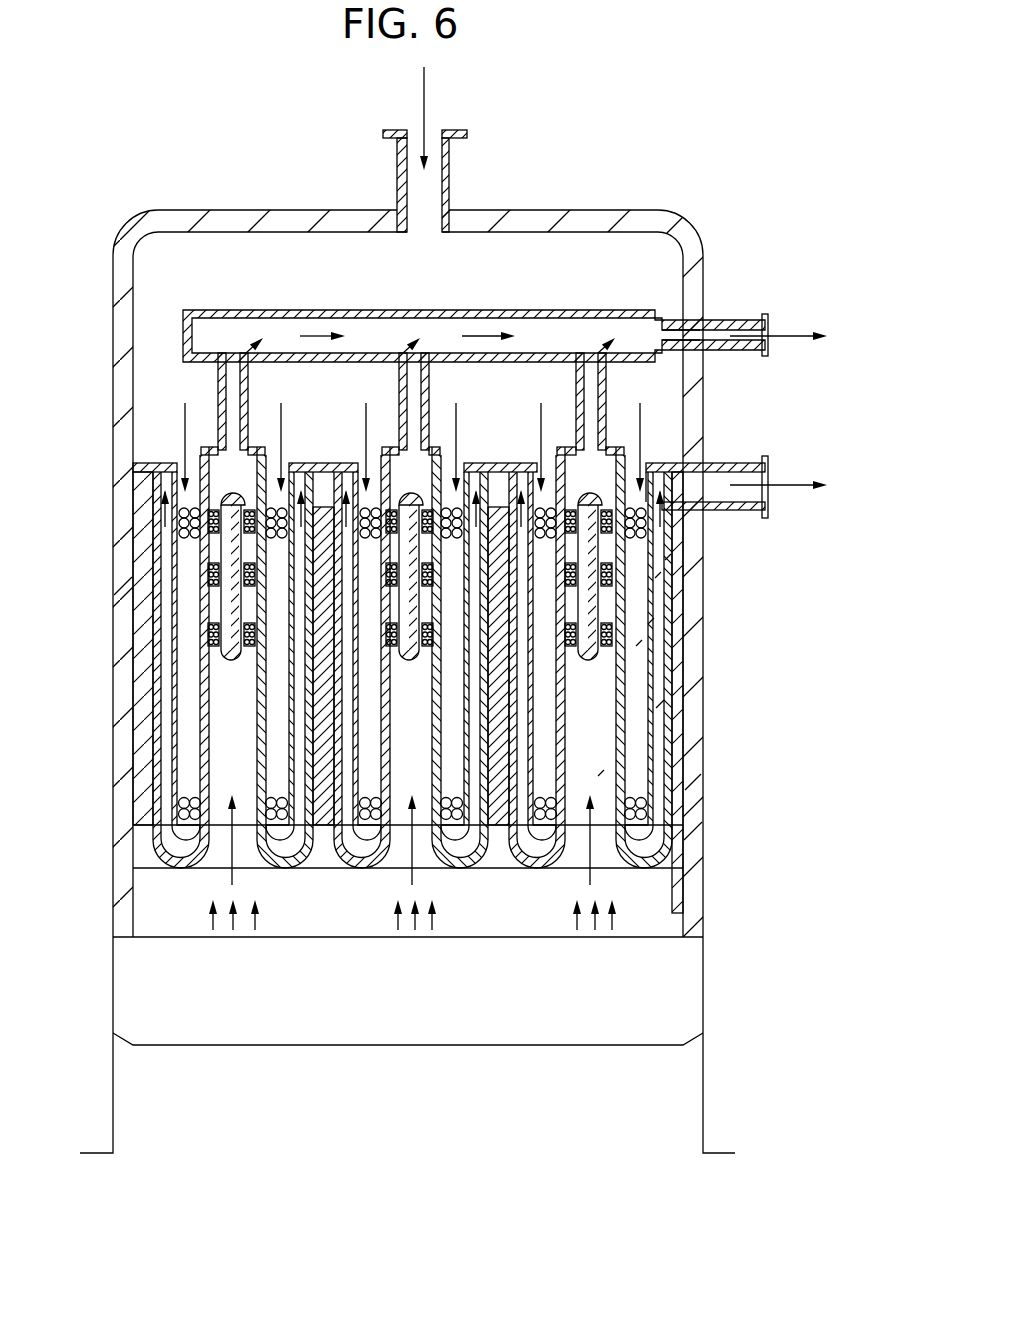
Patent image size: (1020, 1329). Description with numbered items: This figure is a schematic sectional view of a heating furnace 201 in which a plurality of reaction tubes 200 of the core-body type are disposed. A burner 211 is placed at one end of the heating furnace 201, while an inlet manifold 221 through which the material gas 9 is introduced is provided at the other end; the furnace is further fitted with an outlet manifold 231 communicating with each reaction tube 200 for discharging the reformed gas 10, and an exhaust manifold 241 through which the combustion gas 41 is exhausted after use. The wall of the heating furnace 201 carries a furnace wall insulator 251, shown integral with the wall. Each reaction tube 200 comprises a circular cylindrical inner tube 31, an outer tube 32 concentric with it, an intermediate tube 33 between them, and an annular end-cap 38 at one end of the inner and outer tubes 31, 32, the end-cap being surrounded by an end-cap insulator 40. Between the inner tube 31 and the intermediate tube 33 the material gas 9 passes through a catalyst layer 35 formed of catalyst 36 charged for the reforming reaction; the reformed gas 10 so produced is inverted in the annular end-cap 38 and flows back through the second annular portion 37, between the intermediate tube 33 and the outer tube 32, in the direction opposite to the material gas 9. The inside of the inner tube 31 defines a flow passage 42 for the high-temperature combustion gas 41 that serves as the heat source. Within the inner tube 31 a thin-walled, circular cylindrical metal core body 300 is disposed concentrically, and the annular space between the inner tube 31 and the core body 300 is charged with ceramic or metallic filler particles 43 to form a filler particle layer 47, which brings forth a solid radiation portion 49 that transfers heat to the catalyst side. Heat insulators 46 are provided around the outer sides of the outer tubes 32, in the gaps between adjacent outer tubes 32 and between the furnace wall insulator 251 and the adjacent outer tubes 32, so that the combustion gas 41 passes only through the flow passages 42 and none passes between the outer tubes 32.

The material gas 9 is at (426, 94).
The reformed gas 10 is at (790, 484).
The combustion gas 41 is at (300, 318).
The filler particles 43 is at (226, 447).
The heat insulators 46 is at (148, 688).
The filler particle layer 47 is at (222, 518).
The solid radiation portion 49 is at (228, 598).
The inner tube 31 is at (648, 600).
The outer tube 32 is at (653, 618).
The intermediate tube 33 is at (640, 640).
The catalyst layer 35 is at (668, 555).
The catalyst 36 is at (660, 573).
The second annular portion 37 is at (660, 702).
The annular end-cap 38 is at (700, 868).
The end-cap insulator 40 is at (641, 862).
The flow passage 42 is at (600, 773).
The reaction tube 200 is at (690, 800).
The heating furnace 201 is at (712, 789).
The burner 211 is at (636, 1045).
The inlet manifold 221 is at (450, 168).
The outlet manifold 231 is at (728, 463).
The exhaust manifold 241 is at (720, 320).
The furnace wall insulator 251 is at (695, 830).
The core body 300 is at (122, 586).